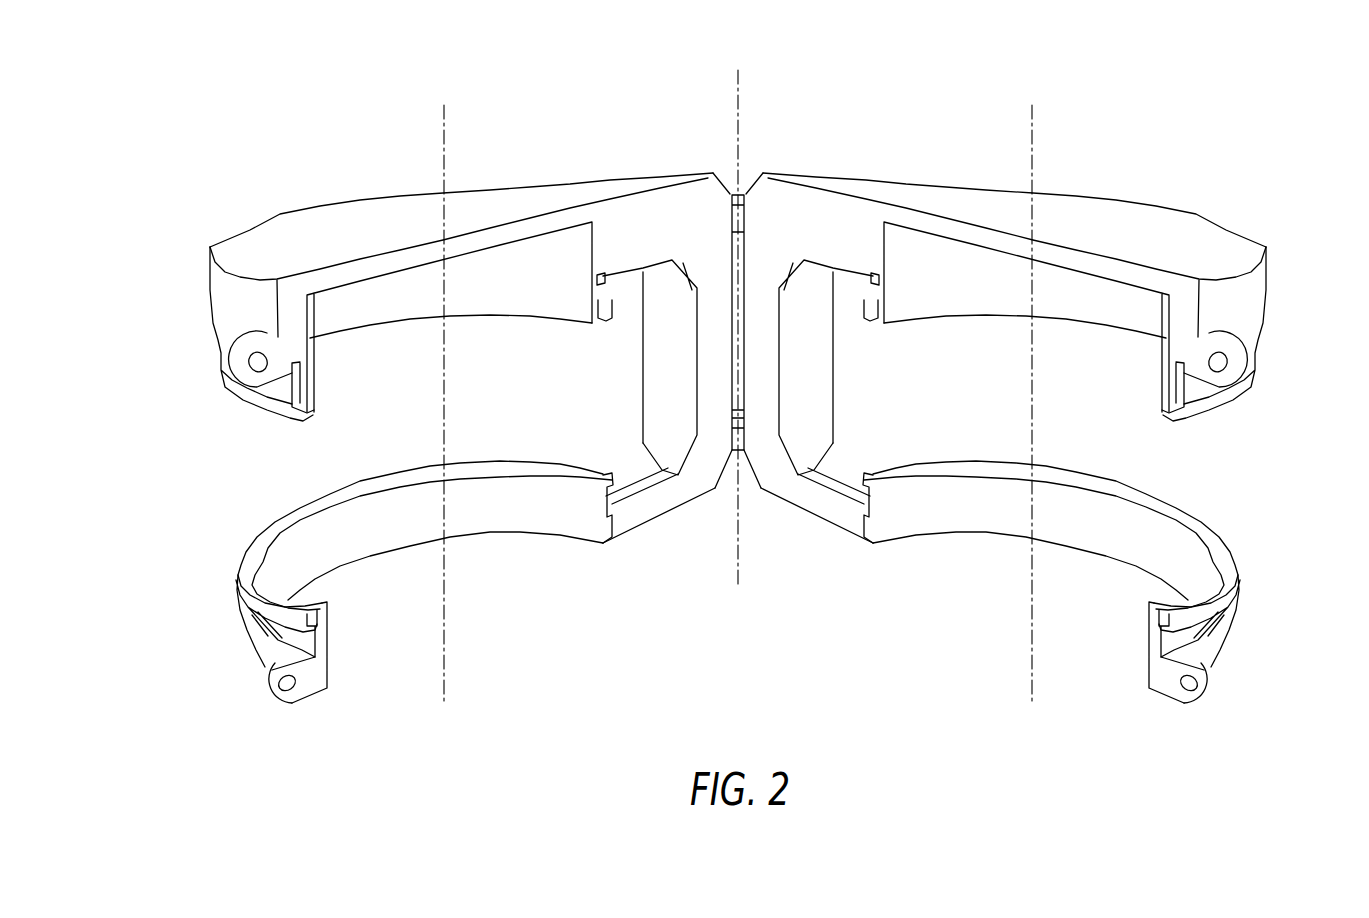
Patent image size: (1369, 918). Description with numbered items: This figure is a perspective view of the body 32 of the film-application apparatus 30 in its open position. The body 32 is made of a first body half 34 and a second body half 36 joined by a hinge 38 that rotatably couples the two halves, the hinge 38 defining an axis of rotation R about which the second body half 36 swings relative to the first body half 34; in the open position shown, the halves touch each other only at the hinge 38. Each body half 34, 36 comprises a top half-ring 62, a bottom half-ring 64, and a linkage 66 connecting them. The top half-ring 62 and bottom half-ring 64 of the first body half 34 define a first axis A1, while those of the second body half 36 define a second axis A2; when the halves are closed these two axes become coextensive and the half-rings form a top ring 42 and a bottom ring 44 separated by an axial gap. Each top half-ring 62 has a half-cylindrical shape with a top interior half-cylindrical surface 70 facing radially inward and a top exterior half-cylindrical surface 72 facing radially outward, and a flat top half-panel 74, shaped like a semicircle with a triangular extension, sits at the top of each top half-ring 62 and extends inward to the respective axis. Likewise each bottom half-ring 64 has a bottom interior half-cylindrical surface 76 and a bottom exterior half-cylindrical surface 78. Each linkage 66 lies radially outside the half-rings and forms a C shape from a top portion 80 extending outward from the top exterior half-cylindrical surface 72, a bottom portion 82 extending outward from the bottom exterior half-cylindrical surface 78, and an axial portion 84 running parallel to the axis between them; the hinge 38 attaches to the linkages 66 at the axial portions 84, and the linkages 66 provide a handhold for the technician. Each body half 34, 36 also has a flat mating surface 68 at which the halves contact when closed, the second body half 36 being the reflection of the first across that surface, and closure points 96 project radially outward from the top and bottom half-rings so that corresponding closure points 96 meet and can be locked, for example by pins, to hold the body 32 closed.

The film-application apparatus 30 is at (294, 116).
The body 32 is at (928, 184).
The first body half 34 is at (385, 195).
The second body half 36 is at (1090, 197).
The hinge 38 is at (733, 196).
The top ring 42 is at (212, 292).
The bottom ring 44 is at (262, 527).
The top half-ring 62 is at (505, 318).
The bottom half-ring 64 is at (500, 535).
The linkage 66 is at (640, 365).
The flat mating surface 68 is at (700, 468).
The top interior half-cylindrical surface 70 is at (383, 308).
The top exterior half-cylindrical surface 72 is at (232, 322).
The top half-panel 74 is at (280, 230).
The bottom interior half-cylindrical surface 76 is at (382, 530).
The bottom exterior half-cylindrical surface 78 is at (258, 650).
The top portion 80 is at (675, 218).
The bottom portion 82 is at (632, 513).
The axial portion 84 is at (663, 390).
The closure point 96 is at (233, 347).
The first axis A1 is at (443, 403).
The second axis A2 is at (1031, 403).
The axis of rotation R is at (738, 324).